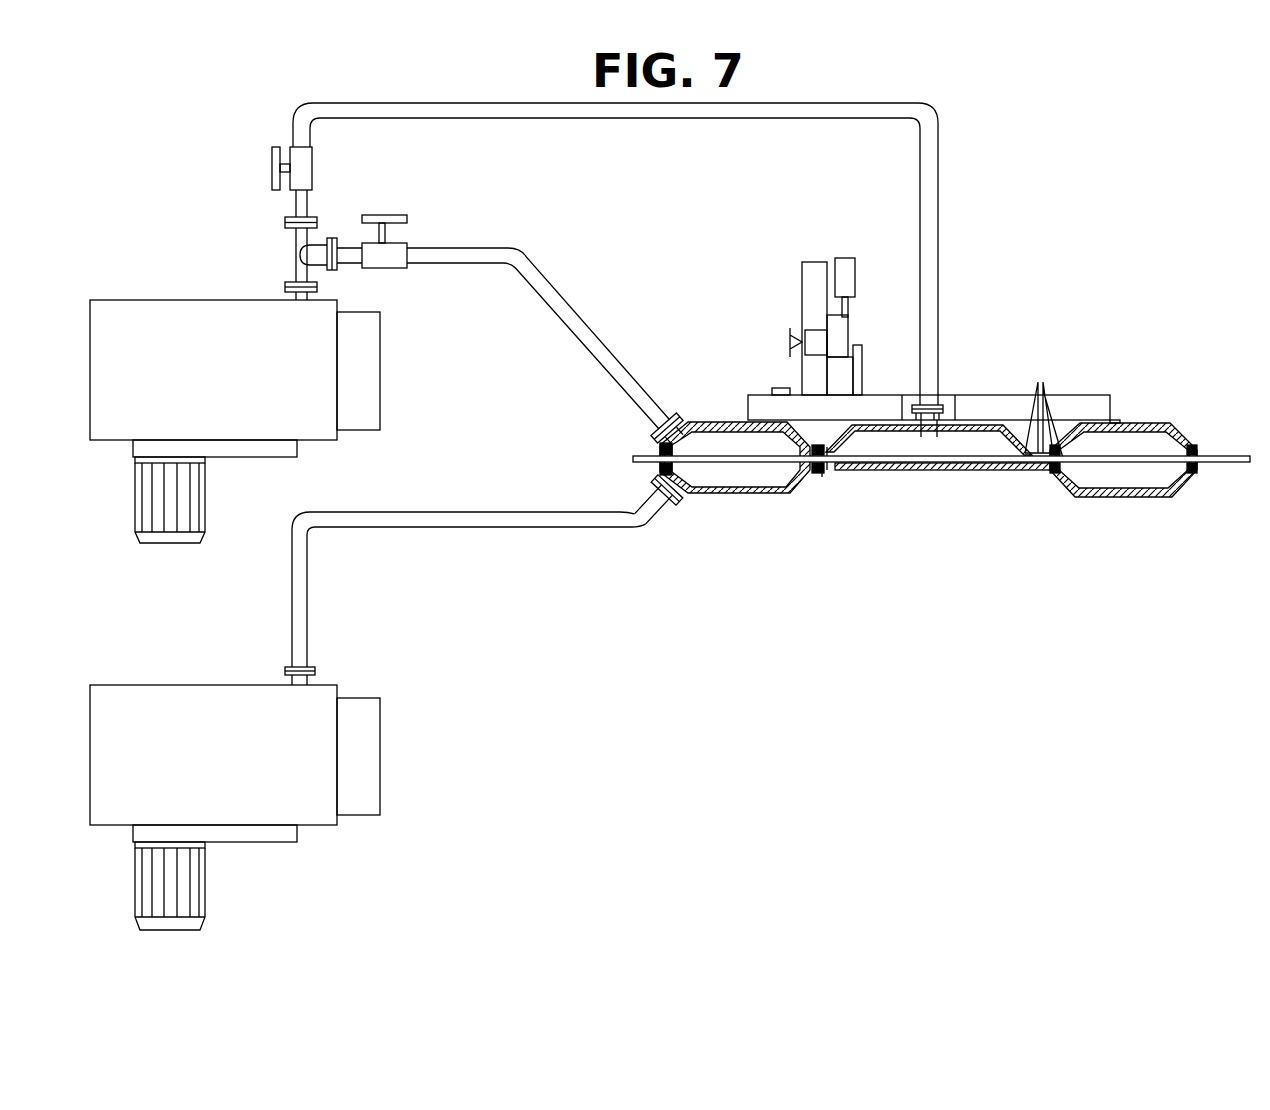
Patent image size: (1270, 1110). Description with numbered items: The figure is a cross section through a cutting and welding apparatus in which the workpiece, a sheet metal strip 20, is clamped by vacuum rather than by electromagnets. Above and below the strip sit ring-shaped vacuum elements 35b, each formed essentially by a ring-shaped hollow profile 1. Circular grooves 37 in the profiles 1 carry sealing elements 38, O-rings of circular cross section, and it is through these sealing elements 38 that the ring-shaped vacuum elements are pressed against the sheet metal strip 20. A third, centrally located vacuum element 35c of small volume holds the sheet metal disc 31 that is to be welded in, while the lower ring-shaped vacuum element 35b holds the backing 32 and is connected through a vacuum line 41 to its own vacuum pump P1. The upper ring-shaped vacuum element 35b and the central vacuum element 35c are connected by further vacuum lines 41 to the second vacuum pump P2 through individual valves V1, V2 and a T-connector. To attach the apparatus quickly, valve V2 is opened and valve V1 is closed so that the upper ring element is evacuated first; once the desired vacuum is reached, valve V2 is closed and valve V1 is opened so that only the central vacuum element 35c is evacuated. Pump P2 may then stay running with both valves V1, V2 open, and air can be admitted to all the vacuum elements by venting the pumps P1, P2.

The ring-shaped hollow profile 1 is at (1150, 423).
The sheet metal strip 20 is at (1242, 464).
The sheet metal disc 31 is at (917, 471).
The backing 32 is at (990, 471).
The ring-shaped vacuum element 35b is at (1123, 449).
The central vacuum element 35c is at (962, 357).
The circular groove 37 is at (833, 472).
The sealing element 38 is at (1040, 380).
The vacuum line 41 is at (367, 112).
The valve V1 is at (272, 169).
The valve V2 is at (405, 243).
The vacuum pump P1 is at (217, 737).
The vacuum pump P2 is at (217, 352).